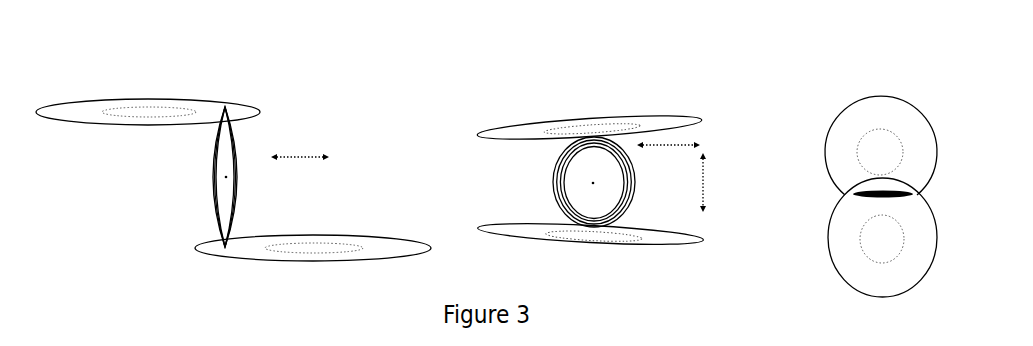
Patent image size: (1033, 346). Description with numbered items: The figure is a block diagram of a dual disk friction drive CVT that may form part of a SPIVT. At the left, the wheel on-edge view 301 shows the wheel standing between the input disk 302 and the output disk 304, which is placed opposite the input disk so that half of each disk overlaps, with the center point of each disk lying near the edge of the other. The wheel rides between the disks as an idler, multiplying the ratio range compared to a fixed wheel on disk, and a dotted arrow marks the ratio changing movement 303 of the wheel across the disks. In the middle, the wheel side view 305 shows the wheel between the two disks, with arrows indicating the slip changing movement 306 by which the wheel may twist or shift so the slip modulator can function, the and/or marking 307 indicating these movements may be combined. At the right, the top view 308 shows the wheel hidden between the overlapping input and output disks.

The wheel on-edge view 301 is at (242, 149).
The input disk 302 is at (148, 99).
The ratio changing movement 303 is at (300, 175).
The output disk 304 is at (313, 263).
The wheel side view 305 is at (590, 152).
The slip changing movement 306 is at (557, 182).
The and/or 307 is at (671, 177).
The top view, showing hidden wheel between input/output disks 308 is at (881, 156).